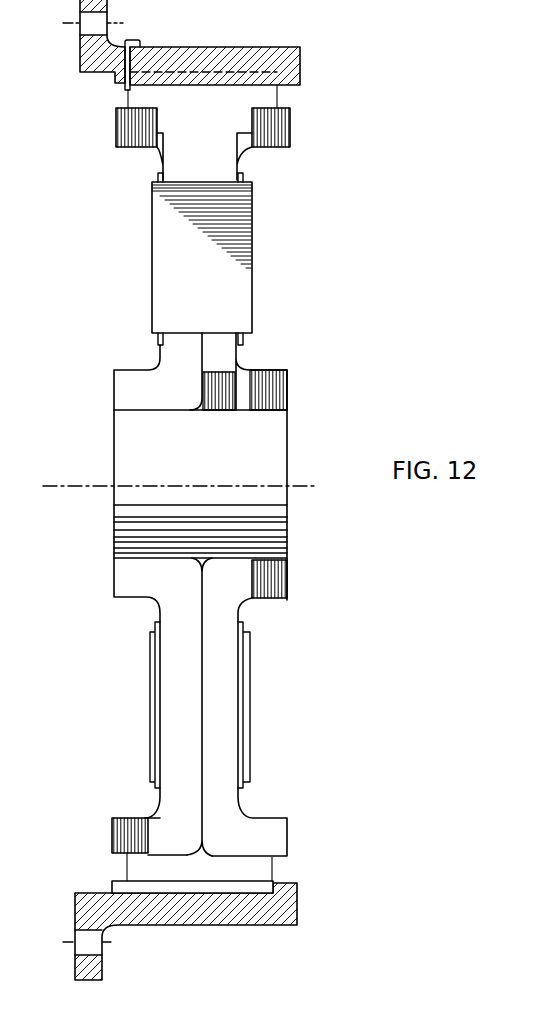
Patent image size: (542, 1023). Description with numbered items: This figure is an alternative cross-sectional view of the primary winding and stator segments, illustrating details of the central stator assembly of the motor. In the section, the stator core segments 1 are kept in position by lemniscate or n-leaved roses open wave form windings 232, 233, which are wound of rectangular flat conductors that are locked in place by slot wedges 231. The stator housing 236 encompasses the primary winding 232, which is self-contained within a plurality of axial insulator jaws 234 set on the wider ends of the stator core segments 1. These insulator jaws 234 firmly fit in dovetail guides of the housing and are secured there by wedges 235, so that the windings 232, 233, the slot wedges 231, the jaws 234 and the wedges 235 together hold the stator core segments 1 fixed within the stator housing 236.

The stator core segment 1 is at (233, 282).
The slot wedge 231 is at (247, 174).
The primary winding 232 is at (115, 132).
The open wave form winding 233 is at (287, 125).
The axial insulator jaw 234 is at (224, 133).
The wedge 235 is at (137, 40).
The stator housing 236 is at (233, 50).